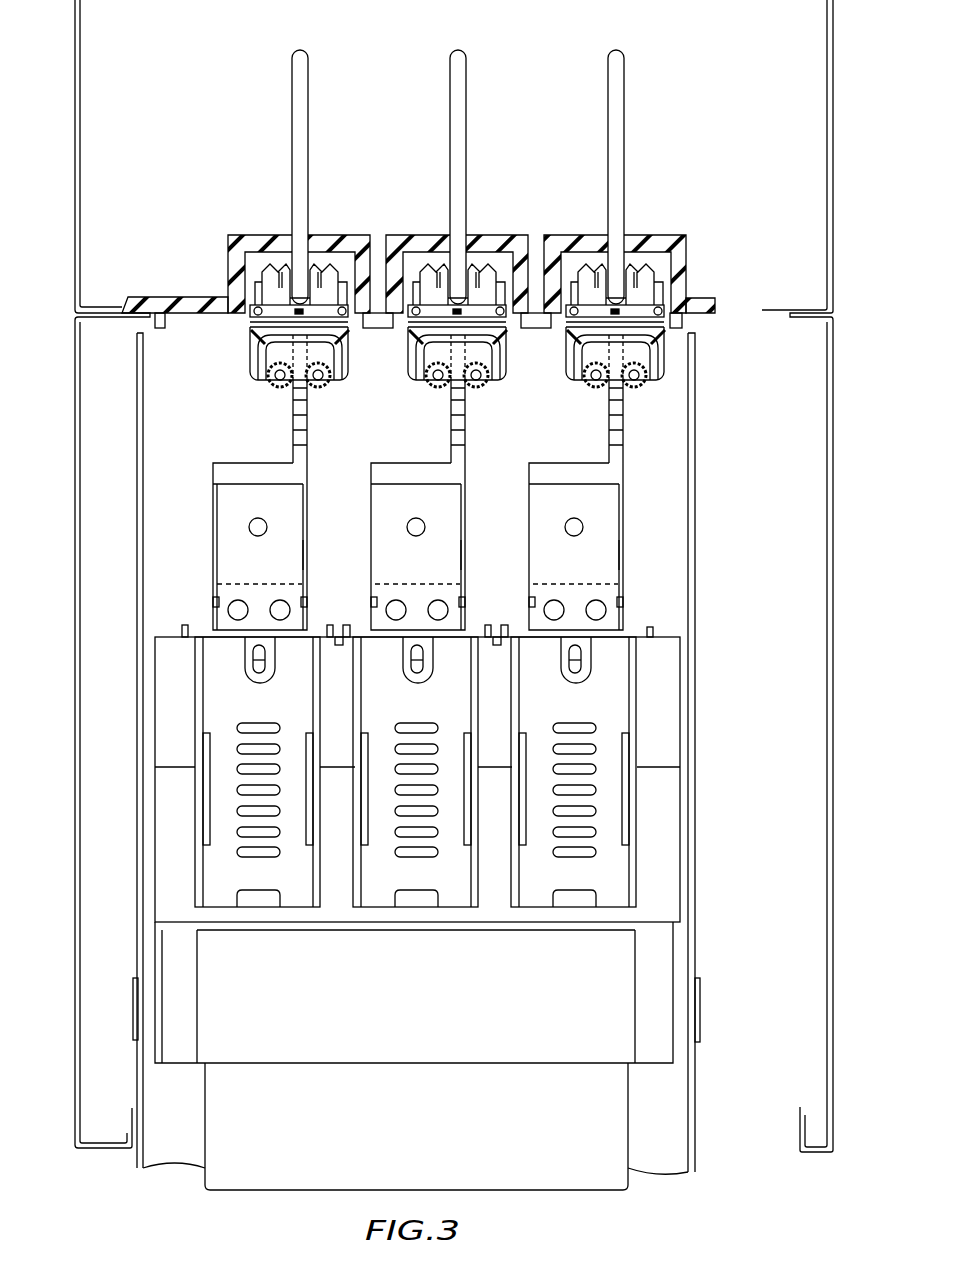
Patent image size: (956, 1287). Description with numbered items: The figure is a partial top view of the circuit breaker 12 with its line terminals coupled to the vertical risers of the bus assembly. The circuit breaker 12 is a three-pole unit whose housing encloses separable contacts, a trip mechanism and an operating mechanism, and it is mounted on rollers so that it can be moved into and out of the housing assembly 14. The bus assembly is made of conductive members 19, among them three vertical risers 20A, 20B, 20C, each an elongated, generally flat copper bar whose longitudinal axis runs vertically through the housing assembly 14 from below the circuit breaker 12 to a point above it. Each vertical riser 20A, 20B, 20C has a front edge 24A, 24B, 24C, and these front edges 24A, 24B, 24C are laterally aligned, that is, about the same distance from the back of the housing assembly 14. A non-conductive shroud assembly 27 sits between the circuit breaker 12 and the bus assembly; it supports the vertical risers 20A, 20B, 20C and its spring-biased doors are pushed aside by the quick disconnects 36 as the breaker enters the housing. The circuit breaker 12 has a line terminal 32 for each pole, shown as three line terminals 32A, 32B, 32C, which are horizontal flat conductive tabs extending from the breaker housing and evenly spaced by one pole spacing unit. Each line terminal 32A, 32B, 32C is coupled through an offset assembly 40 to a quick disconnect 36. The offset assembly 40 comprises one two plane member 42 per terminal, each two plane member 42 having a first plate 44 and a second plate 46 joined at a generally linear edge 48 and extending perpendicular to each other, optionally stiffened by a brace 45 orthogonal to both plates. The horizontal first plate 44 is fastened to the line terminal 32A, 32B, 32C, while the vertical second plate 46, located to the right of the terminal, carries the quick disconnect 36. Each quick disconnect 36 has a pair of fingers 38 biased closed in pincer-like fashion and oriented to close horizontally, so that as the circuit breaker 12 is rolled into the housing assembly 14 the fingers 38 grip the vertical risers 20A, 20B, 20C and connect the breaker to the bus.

The circuit breaker 12 is at (163, 805).
The housing assembly 14 is at (138, 740).
The conductive members 19 is at (292, 58).
The vertical riser 20A is at (292, 97).
The vertical riser 20B is at (452, 96).
The vertical riser 20C is at (610, 97).
The front edge 24A is at (285, 296).
The front edge 24B is at (418, 292).
The front edge 24C is at (655, 297).
The shroud assembly 27 is at (697, 303).
The line terminal 32 is at (407, 711).
The line terminal 32A is at (230, 637).
The line terminal 32B is at (389, 637).
The line terminal 32C is at (543, 640).
The quick disconnect 36 is at (250, 340).
The fingers 38 is at (273, 267).
The offset assembly 40 is at (213, 466).
The two plane member 42 is at (215, 505).
The first plate 44 is at (295, 553).
The brace 45 is at (238, 478).
The second plate 46 is at (308, 393).
The linear edge 48 is at (305, 478).